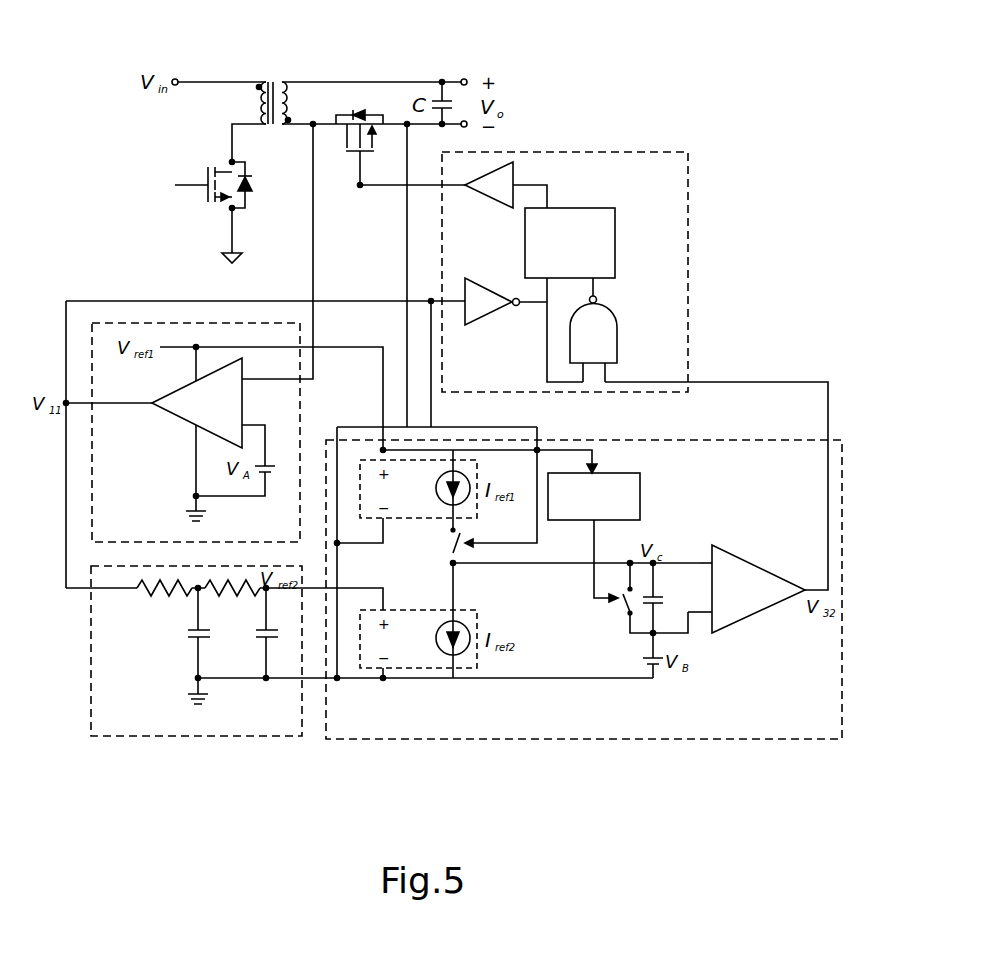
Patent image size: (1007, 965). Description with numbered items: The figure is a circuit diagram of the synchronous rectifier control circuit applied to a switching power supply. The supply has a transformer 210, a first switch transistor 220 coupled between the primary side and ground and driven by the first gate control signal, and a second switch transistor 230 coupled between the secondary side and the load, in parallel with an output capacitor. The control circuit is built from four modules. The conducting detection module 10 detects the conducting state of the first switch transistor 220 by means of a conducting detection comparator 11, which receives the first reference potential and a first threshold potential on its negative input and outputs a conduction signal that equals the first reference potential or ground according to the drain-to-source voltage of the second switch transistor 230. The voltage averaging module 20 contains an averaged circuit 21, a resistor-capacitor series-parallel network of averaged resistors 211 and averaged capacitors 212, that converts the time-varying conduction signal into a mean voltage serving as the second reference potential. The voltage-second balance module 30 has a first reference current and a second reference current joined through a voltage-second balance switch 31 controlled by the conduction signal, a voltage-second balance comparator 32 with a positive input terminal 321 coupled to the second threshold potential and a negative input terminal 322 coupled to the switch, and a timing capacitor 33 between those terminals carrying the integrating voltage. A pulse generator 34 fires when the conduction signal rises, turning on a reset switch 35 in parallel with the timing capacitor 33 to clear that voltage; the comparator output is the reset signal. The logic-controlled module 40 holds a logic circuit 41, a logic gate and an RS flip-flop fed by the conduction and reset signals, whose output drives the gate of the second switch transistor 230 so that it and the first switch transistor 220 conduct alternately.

The conducting detection module 10 is at (102, 316).
The conducting detection comparator 11 is at (177, 417).
The voltage averaging module 20 is at (242, 747).
The averaged circuit 21 is at (189, 696).
The resistor 211 is at (152, 594).
The capacitor 212 is at (188, 637).
The voltage-second balance module 30 is at (507, 750).
The voltage-second balance switch 31 is at (448, 543).
The voltage-second balance comparator 32 is at (746, 584).
The positive input terminal 321 is at (700, 562).
The negative input terminal 322 is at (700, 613).
The timing capacitor 33 is at (660, 585).
The pulse generator 34 is at (641, 477).
The reset switch 35 is at (620, 607).
The logic-controlled module 40 is at (693, 268).
The logic circuit 41 is at (610, 207).
The transformer 210 is at (273, 80).
The first switch transistor 220 is at (205, 192).
The second switch transistor 230 is at (355, 152).